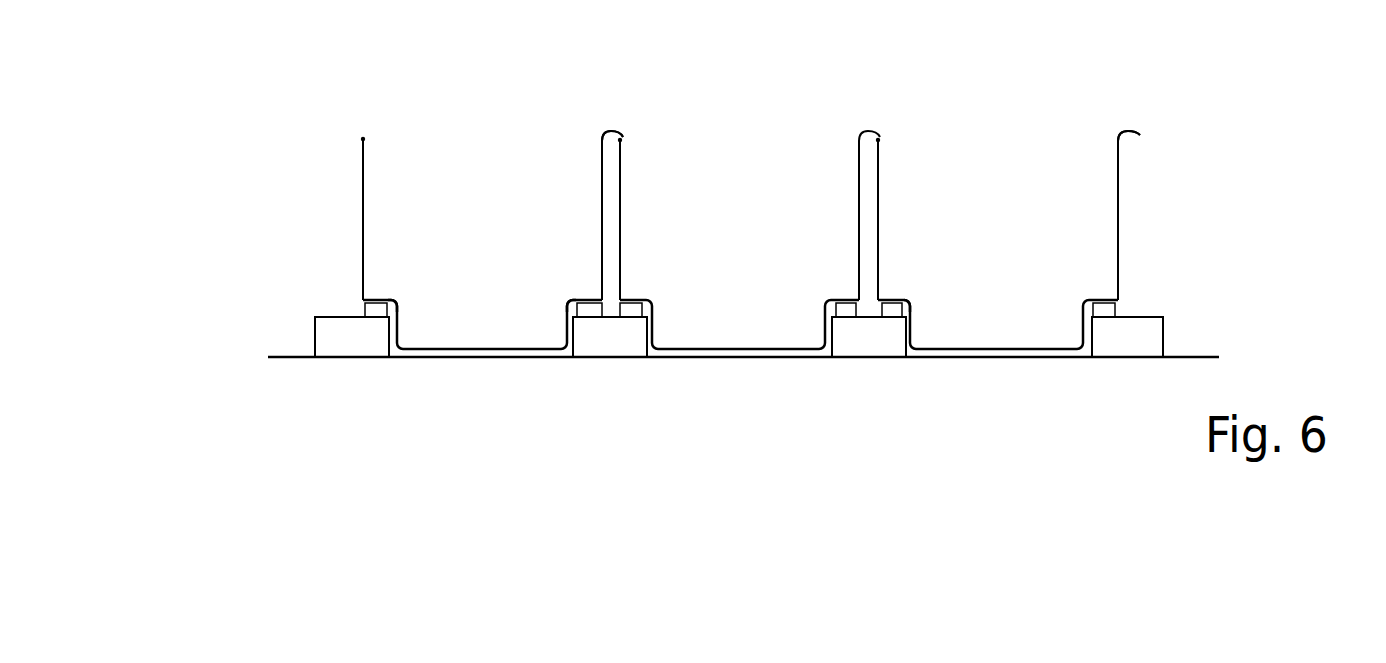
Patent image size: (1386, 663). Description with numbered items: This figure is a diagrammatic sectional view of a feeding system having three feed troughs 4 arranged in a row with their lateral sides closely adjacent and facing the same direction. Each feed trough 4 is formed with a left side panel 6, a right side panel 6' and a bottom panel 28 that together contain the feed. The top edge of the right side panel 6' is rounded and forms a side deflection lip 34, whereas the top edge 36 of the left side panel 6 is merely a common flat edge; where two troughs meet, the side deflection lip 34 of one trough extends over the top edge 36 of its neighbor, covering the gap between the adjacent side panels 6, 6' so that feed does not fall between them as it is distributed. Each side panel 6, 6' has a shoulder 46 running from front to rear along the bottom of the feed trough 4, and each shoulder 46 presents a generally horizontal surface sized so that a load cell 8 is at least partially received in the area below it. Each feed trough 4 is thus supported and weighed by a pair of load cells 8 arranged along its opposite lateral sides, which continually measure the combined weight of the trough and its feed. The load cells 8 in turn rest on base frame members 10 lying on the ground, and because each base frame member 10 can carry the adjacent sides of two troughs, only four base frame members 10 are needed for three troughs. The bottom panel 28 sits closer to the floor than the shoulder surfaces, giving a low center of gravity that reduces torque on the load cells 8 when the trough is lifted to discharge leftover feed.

The feed trough 4 is at (475, 147).
The left side panel 6 is at (642, 180).
The right side panel 6' is at (990, 195).
The load cell 8 is at (363, 307).
The base frame member 10 is at (323, 335).
The bottom panel 28 is at (698, 348).
The side deflection lip 34 is at (610, 130).
The top edge 36 is at (360, 148).
The shoulder 46 is at (388, 298).